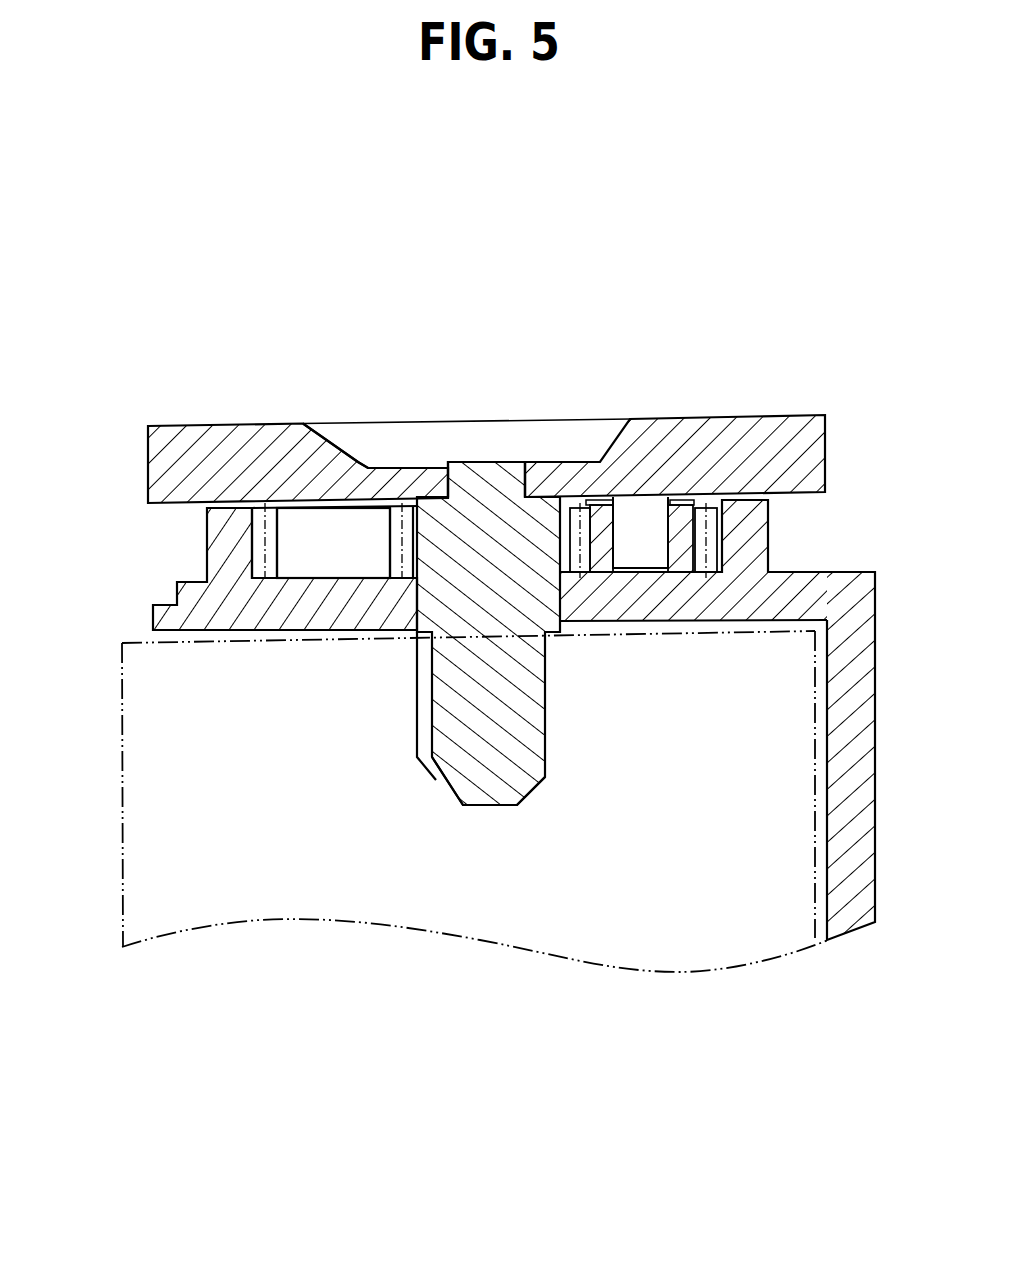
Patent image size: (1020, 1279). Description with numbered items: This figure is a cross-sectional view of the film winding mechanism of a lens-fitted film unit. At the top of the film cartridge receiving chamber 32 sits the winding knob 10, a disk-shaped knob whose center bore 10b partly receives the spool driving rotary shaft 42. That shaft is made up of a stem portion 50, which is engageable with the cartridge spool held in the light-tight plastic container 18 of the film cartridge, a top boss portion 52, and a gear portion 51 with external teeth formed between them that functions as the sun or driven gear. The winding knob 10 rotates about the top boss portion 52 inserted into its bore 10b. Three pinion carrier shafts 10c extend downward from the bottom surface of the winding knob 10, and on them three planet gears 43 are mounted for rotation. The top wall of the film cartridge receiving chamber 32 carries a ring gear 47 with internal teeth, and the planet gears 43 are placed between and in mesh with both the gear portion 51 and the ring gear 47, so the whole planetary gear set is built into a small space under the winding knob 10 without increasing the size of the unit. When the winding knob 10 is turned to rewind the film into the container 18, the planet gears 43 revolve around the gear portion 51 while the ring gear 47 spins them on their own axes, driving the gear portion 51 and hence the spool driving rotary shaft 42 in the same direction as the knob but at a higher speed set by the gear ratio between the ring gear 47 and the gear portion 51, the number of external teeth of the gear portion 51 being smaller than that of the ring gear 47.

The winding knob 10 is at (772, 415).
The center bore 10b is at (433, 468).
The pinion carrier shafts 10c is at (636, 523).
The light-tight plastic container 18 is at (228, 923).
The film cartridge receiving chamber 32 is at (827, 803).
The spool driving rotary shaft 42 is at (537, 792).
The planet gears 43 is at (700, 508).
The ring gear 47 is at (270, 557).
The stem portion 50 is at (535, 707).
The gear portion 51 is at (393, 545).
The top boss portion 52 is at (492, 467).